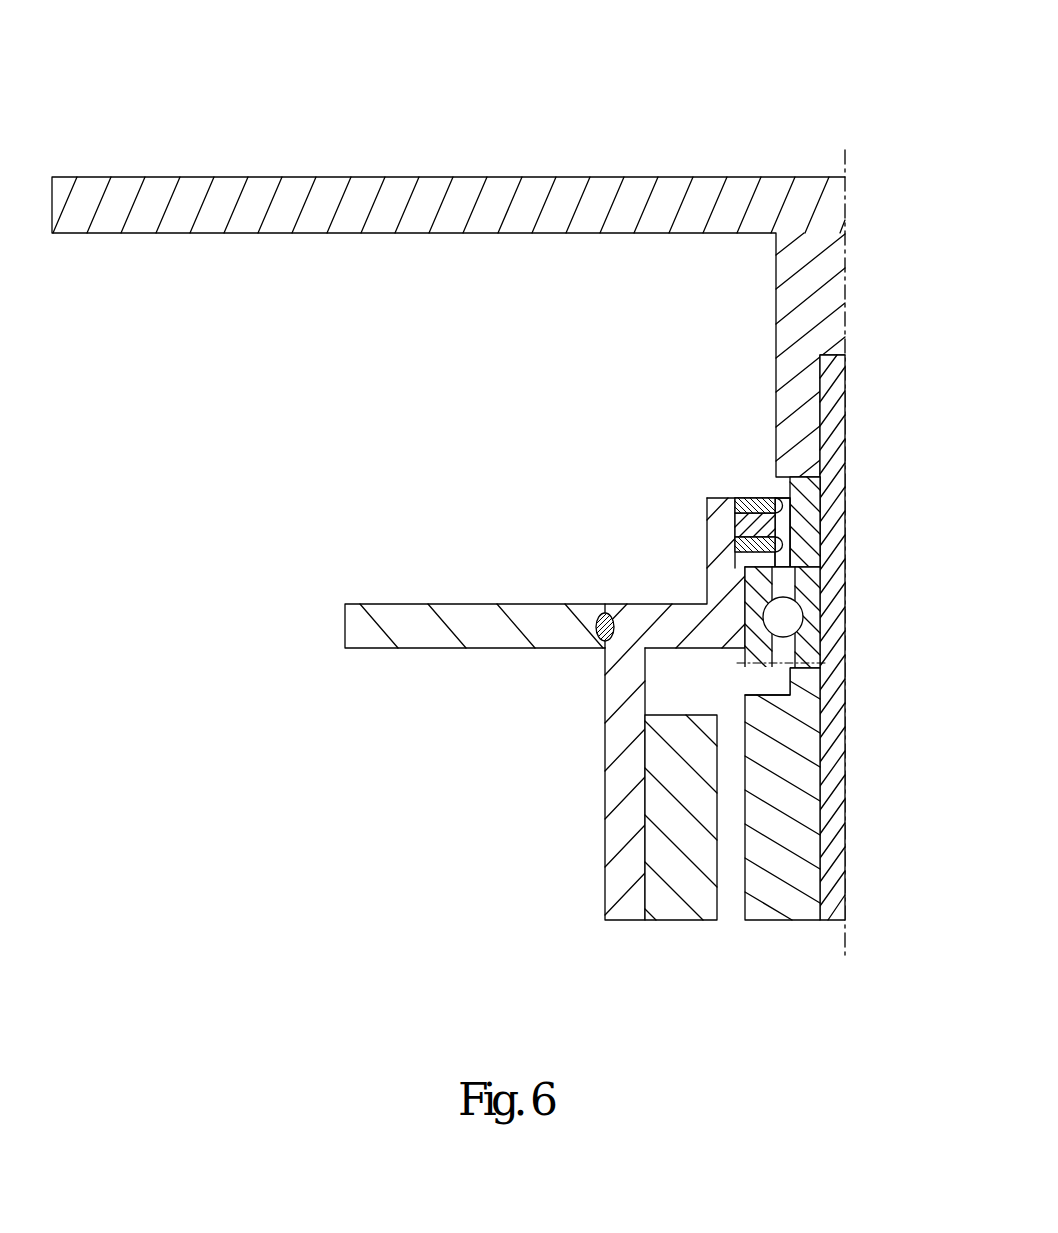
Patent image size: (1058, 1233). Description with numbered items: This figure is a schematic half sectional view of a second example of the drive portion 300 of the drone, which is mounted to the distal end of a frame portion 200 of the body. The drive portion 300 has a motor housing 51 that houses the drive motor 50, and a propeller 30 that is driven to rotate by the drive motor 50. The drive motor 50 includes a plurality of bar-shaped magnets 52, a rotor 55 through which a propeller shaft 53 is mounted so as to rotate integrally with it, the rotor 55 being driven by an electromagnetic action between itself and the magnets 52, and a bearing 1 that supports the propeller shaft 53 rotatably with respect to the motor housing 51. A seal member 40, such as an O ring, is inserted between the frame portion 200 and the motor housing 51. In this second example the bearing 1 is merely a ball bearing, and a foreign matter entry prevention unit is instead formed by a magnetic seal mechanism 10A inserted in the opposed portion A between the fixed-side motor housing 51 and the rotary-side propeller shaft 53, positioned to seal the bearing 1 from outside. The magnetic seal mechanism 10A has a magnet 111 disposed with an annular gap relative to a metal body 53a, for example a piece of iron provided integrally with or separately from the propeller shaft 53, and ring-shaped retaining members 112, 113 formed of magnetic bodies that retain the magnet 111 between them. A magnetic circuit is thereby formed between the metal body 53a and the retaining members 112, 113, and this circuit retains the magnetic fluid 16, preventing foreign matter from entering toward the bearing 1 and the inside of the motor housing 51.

The drive portion 300 is at (822, 112).
The propeller 30 is at (512, 200).
The propeller shaft 53 is at (838, 407).
The metal body 53a is at (812, 498).
The magnetic fluid 16 is at (800, 470).
The opposed portion A is at (805, 553).
The frame portion 200 is at (405, 617).
The drive motor 50 is at (640, 798).
The magnetic seal mechanism 10A is at (744, 486).
The magnet 111 is at (748, 524).
The retaining member 112 is at (766, 498).
The retaining member 113 is at (745, 549).
The seal member 40 is at (600, 613).
The motor housing 51 is at (612, 836).
The magnet 52 is at (682, 887).
The bearing 1 is at (816, 609).
The rotor 55 is at (788, 810).